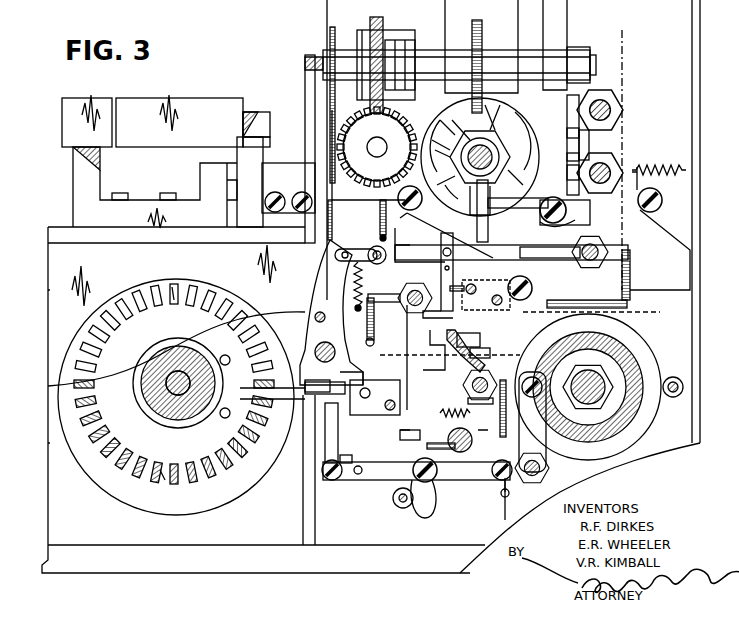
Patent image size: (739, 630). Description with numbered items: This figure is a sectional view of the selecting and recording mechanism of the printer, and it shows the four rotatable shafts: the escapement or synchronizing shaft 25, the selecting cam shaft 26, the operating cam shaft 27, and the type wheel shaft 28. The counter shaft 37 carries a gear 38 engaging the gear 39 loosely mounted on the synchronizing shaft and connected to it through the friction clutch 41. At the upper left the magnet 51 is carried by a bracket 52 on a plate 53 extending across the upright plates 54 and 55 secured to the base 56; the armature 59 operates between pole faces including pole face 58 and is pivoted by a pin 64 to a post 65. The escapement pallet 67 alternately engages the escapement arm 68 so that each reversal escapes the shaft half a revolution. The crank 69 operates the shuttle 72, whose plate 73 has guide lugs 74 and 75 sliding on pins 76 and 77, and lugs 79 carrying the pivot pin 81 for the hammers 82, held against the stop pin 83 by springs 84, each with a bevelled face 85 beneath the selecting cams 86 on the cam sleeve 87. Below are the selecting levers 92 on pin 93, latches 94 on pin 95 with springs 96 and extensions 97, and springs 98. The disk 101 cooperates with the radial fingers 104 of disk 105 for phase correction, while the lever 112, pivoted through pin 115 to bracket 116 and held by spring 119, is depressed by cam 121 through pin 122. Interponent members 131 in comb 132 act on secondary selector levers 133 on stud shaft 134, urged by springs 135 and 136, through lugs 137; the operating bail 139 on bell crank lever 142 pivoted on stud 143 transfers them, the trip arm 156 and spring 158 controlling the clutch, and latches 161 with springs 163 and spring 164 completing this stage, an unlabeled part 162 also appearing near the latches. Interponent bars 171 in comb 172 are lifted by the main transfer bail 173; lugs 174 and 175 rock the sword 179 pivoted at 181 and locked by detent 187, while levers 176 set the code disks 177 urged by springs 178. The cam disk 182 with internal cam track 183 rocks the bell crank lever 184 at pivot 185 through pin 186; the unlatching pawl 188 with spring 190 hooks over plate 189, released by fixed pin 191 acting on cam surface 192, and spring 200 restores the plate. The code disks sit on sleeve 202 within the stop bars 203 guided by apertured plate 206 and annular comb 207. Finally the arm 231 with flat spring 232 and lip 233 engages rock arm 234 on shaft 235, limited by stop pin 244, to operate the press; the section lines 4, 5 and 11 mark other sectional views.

The section line 4 is at (387, 338).
The section line 5 is at (480, 424).
The section line 11 is at (618, 284).
The escapement or synchronizing shaft 25 is at (564, 38).
The selecting cam shaft 26 is at (505, 137).
The operating cam shaft 27 is at (615, 378).
The type wheel shaft 28 is at (180, 345).
The counter shaft 37 is at (378, 153).
The gear 38 is at (377, 147).
The gear 39 is at (372, 26).
The friction clutch 41 is at (390, 30).
The magnet 51 is at (196, 104).
The bracket 52 is at (100, 176).
The plate 53 is at (58, 228).
The upright plate 54 is at (48, 289).
The upright plate 55 is at (48, 445).
The base 56 is at (62, 575).
The pole face 58 is at (255, 115).
The armature 59 is at (270, 142).
The pin 64 is at (228, 195).
The post 65 is at (247, 180).
The escapement pallet 67 is at (307, 92).
The escapement arm 68 is at (310, 60).
The crank 69 is at (582, 48).
The shuttle 72 is at (612, 145).
The shuttle plate 73 is at (570, 140).
The guide lugs 74 is at (570, 108).
The guide lugs 75 is at (570, 172).
The pin 76 is at (614, 110).
The pin 77 is at (613, 168).
The lugs 79 is at (575, 216).
The pivot pin 81 is at (553, 226).
The hammers 82 is at (488, 236).
The stop pin 83 is at (553, 197).
The springs 84 is at (550, 252).
The bevelled face 85 is at (490, 201).
The selecting cams 86 is at (470, 132).
The cam sleeve 87 is at (486, 112).
The selecting levers 92 is at (511, 252).
The pin 93 is at (590, 270).
The latches 94 is at (405, 247).
The pin 95 is at (410, 186).
The springs 96 is at (379, 213).
The latch extension 97 is at (445, 233).
The springs 98 is at (632, 283).
The disk 101 is at (480, 32).
The radial fingers 104 is at (455, 125).
The disk 105 is at (448, 145).
The lever 112 is at (337, 220).
The horizontal pin 115 is at (648, 213).
The bracket 116 is at (672, 235).
The spring 119 is at (668, 165).
The cam 121 is at (342, 52).
The pin 122 is at (330, 168).
The interponent member 131 is at (453, 318).
The comb 132 is at (497, 293).
The secondary selector levers 133 is at (410, 376).
The stud shaft 134 is at (405, 308).
The springs 135 is at (465, 284).
The springs 136 is at (375, 330).
The lug 137 is at (466, 351).
The operating bail 139 is at (482, 338).
The bell crank lever 142 is at (491, 351).
The stud 143 is at (463, 381).
The arm 156 is at (568, 160).
The spring 158 is at (565, 298).
The latches 161 is at (410, 438).
The pin 162 is at (502, 476).
The springs 163 is at (503, 462).
The spring 164 is at (507, 430).
The interponent bar 171 is at (362, 416).
The comb 172 is at (388, 412).
The main transfer bail 173 is at (325, 419).
The lug 174 is at (310, 379).
The lug 175 is at (355, 372).
The levers 176 is at (260, 375).
The code disks 177 is at (137, 362).
The springs 178 is at (160, 470).
The sword 179 is at (318, 282).
The pivot 181 is at (325, 337).
The cam disk 182 is at (630, 346).
The internal cam track 183 is at (673, 398).
The bell crank lever 184 is at (508, 497).
The pivot 185 is at (548, 472).
The pin 186 is at (532, 422).
The detent 187 is at (355, 245).
The unlatching pawl 188 is at (432, 508).
The plate 189 is at (450, 408).
The spring 190 is at (442, 460).
The fixed pin 191 is at (400, 508).
The cam surface 192 is at (405, 505).
The spring 200 is at (459, 390).
The sleeve 202 is at (165, 346).
The stop bars 203 is at (125, 302).
The apertured plate 206 is at (172, 287).
The annular comb 207 is at (190, 505).
The arm 231 is at (395, 482).
The flat spring 232 is at (447, 452).
The lip 233 is at (395, 461).
The rock arm 234 is at (350, 455).
The shaft 235 is at (332, 481).
The stop pin 244 is at (358, 475).